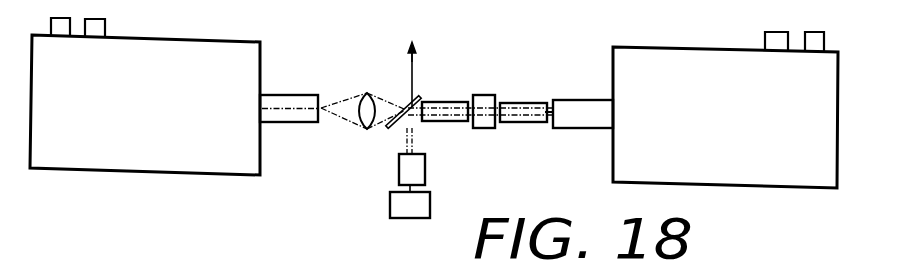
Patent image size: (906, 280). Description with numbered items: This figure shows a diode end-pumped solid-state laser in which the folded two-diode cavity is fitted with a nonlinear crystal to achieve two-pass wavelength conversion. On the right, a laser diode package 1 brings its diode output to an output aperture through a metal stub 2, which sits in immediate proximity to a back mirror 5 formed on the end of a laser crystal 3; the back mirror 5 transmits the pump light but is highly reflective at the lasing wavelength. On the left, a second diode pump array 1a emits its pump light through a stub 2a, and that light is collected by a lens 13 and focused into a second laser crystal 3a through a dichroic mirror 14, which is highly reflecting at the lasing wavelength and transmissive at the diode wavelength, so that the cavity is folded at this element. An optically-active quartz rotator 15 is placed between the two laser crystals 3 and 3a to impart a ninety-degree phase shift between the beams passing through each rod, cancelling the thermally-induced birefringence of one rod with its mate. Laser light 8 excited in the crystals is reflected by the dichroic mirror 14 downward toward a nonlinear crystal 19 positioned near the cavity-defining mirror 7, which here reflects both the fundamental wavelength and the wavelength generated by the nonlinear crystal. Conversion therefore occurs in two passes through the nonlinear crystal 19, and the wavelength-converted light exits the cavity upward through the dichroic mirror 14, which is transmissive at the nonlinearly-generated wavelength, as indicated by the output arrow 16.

The laser diode package 1 is at (667, 47).
The second diode pump array 1a is at (173, 175).
The metal stub 2 is at (588, 100).
The output stub of second diode array 2a is at (278, 95).
The laser crystal 3 is at (512, 100).
The second laser crystal 3a is at (457, 122).
The back mirror 5 is at (548, 103).
The front mirror 7 is at (390, 201).
The laser light 8 is at (413, 133).
The lens 13 is at (368, 93).
The dichroic mirror 14 is at (412, 72).
The quartz rotator 15 is at (495, 128).
The beam direction arrow 16 is at (415, 42).
The nonlinear crystal 19 is at (399, 164).